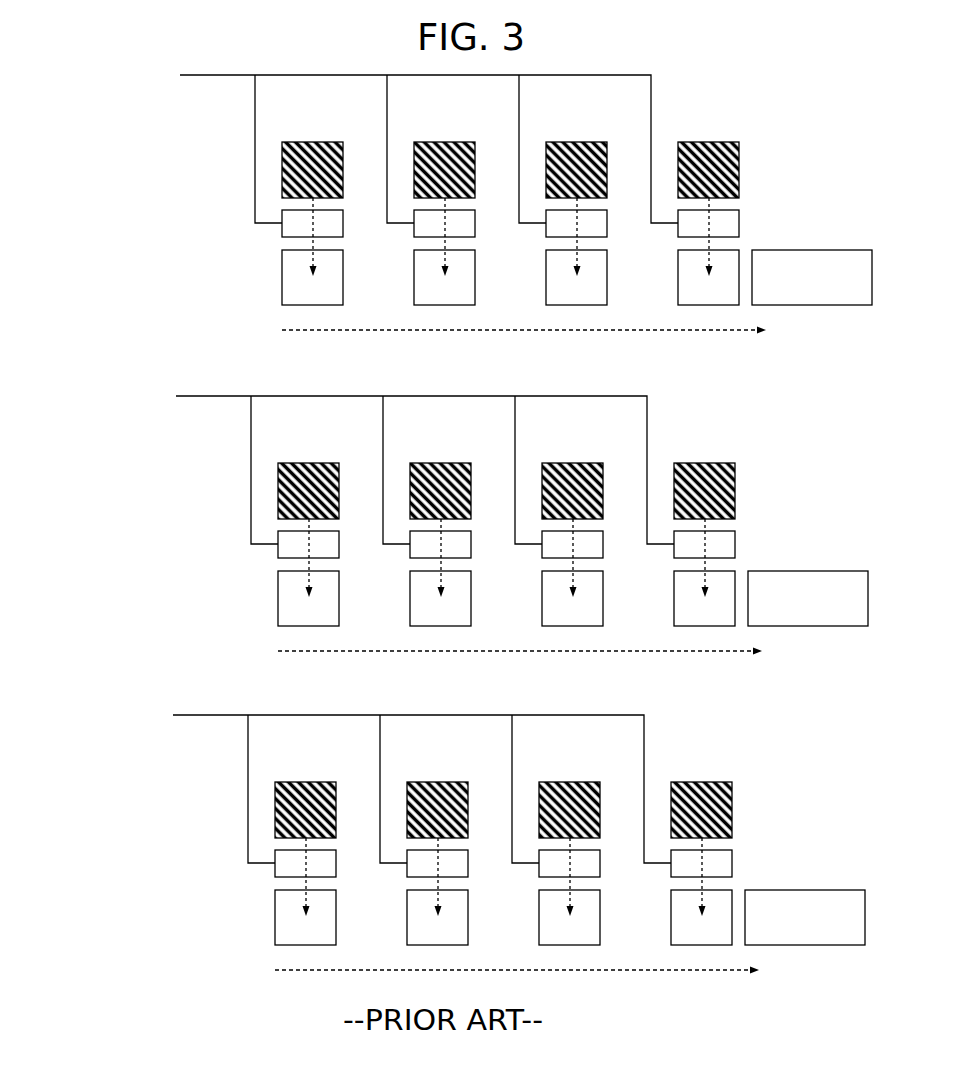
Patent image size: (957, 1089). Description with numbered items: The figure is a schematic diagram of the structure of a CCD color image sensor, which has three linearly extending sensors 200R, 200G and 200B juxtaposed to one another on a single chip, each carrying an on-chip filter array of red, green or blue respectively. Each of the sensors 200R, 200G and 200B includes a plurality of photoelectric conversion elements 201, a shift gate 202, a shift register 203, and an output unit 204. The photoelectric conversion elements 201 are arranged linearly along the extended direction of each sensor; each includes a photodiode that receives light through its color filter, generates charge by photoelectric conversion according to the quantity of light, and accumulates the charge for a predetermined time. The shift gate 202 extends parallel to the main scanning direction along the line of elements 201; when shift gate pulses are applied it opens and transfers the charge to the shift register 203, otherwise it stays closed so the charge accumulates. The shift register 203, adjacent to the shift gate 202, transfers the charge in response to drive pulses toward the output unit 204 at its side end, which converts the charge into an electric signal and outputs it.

The sensor 200R is at (772, 95).
The sensor 200G is at (452, 520).
The sensor 200B is at (449, 839).
The photoelectric conversion element 201 is at (282, 170).
The shift gate 202 is at (282, 234).
The shift register 203 is at (282, 278).
The output unit 204 is at (795, 250).